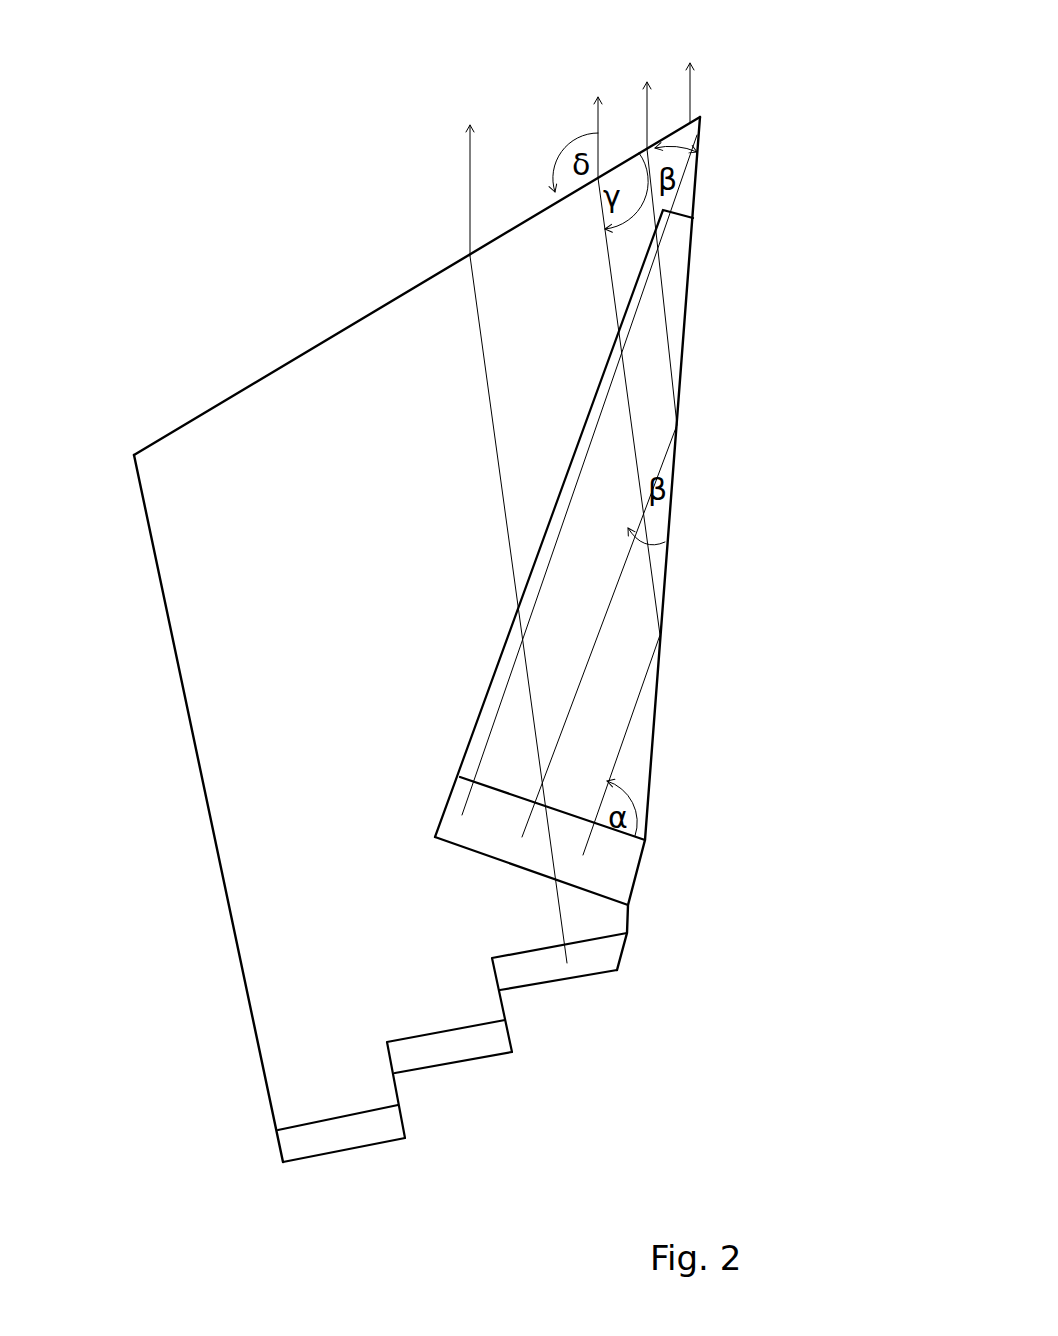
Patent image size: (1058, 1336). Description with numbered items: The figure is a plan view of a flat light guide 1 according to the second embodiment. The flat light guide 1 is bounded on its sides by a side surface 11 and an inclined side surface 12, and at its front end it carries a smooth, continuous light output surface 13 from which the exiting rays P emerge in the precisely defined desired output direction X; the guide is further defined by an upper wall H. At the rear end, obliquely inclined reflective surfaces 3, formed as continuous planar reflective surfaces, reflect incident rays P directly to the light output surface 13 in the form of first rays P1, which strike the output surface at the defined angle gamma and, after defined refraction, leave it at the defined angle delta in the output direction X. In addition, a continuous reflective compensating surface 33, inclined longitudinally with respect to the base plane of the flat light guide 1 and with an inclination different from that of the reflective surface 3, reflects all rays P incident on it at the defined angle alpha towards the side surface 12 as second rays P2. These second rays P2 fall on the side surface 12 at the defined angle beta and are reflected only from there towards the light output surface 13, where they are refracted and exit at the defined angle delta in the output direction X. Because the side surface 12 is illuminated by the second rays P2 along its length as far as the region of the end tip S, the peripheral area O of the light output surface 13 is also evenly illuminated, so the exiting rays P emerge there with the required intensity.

The flat light guide 1 is at (477, 647).
The light output surface 13 is at (212, 453).
The side surface 11 is at (230, 897).
The side surface 12 is at (668, 528).
The reflective surface 3 is at (592, 952).
The continuous reflective compensating surface 33 is at (613, 860).
The light rays P is at (472, 188).
The first rays P1 is at (490, 385).
The second rays P2 is at (540, 617).
The upper wall H is at (257, 643).
The end tip S is at (705, 112).
The desired output direction X is at (405, 213).
The peripheral area O is at (693, 33).